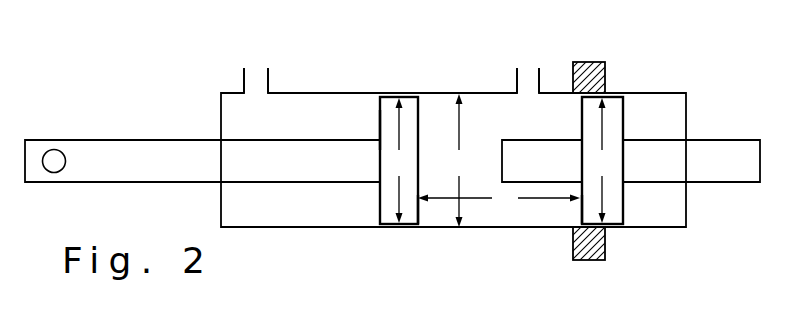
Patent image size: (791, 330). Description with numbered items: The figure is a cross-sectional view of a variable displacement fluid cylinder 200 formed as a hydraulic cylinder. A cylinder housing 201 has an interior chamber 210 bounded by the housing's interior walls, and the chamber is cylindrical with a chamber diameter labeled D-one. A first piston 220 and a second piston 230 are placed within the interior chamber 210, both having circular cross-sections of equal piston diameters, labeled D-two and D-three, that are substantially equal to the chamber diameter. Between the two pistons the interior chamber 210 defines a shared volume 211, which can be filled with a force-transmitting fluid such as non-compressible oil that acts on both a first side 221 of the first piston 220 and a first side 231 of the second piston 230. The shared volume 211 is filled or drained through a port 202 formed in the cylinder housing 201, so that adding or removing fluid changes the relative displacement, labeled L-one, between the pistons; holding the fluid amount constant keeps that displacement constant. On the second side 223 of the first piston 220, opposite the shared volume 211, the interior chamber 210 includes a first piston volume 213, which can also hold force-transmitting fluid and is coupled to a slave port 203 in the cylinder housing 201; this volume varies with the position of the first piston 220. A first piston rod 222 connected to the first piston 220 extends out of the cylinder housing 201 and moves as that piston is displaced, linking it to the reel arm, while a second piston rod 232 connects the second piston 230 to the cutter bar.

The variable displacement fluid cylinder 200 is at (392, 165).
The cylinder housing 201 is at (320, 228).
The port 202 is at (527, 82).
The slave port 203 is at (255, 87).
The interior chamber 210 is at (440, 112).
The shared volume 211 is at (538, 130).
The first piston volume 213 is at (329, 130).
The first piston 220 is at (392, 101).
The first side of the first piston 221 is at (418, 210).
The first piston rod 222 is at (145, 139).
The second side of the first piston 223 is at (380, 130).
The second piston 230 is at (618, 105).
The first side of the second piston 231 is at (580, 211).
The second piston rod 232 is at (705, 138).